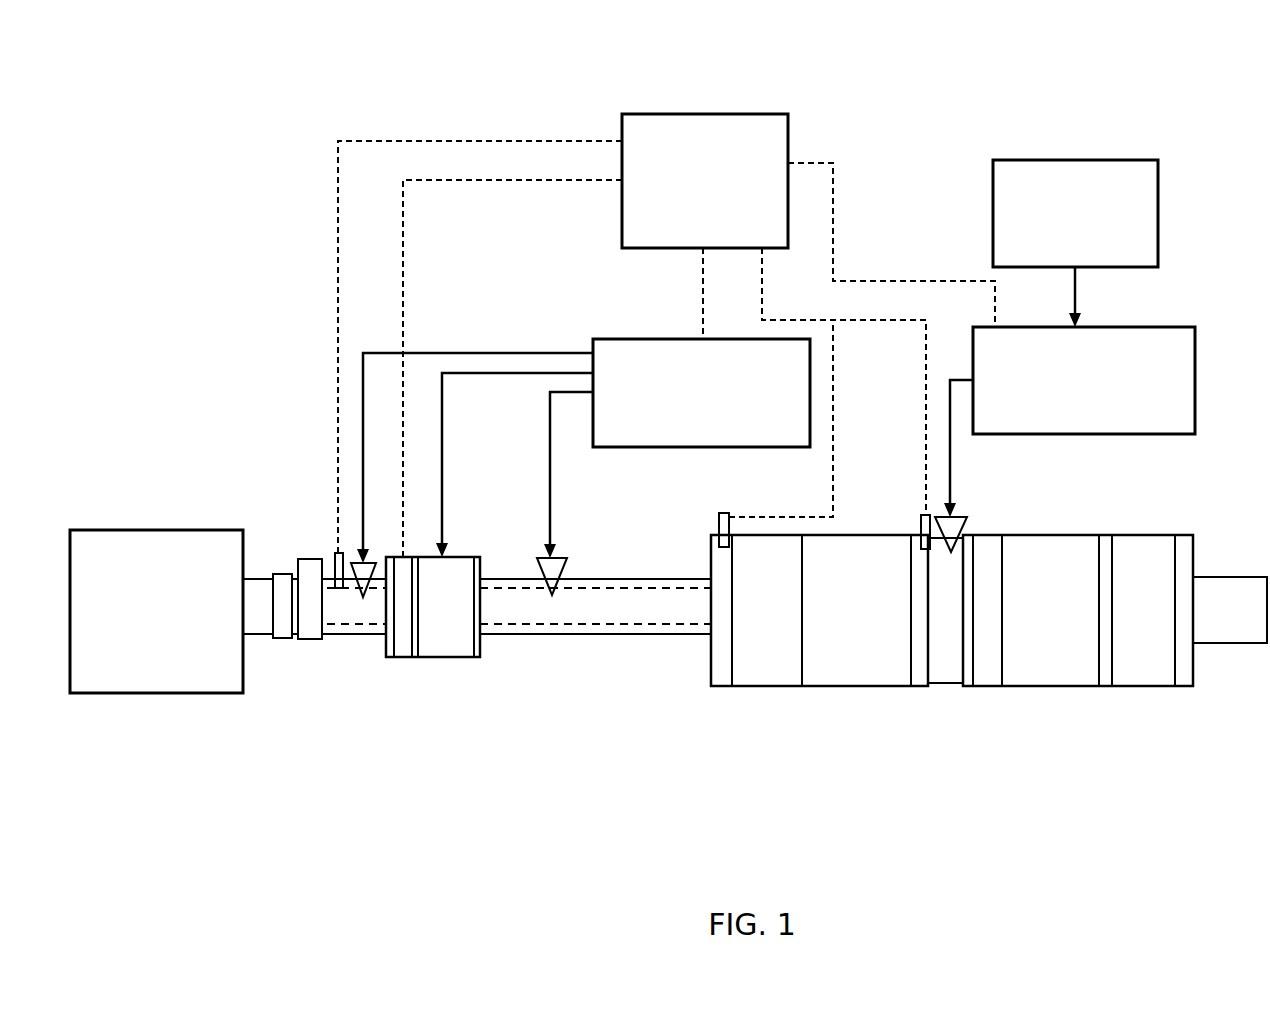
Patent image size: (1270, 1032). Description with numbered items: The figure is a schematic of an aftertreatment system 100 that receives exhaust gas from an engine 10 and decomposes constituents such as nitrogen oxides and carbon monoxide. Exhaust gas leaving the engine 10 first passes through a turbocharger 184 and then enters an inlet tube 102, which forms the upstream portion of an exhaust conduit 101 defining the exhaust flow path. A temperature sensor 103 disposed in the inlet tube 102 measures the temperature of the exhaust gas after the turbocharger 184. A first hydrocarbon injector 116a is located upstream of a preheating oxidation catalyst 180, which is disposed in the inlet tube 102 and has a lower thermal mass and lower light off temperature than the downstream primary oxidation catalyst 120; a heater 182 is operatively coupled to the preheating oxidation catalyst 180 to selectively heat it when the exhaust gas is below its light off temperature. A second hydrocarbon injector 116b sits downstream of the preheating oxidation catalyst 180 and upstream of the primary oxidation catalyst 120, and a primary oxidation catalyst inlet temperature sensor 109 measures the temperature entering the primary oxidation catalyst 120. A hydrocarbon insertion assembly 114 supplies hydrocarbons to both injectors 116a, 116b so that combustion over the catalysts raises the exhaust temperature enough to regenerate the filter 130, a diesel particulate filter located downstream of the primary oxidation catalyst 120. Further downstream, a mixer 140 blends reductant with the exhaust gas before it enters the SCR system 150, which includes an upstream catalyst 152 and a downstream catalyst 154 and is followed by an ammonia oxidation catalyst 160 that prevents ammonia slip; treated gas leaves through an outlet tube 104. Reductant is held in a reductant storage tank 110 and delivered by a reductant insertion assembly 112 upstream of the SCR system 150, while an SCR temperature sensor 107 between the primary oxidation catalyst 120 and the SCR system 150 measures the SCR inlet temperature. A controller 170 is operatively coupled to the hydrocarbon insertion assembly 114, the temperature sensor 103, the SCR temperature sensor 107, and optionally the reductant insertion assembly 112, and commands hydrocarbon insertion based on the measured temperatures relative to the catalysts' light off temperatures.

The aftertreatment system 100 is at (1146, 74).
The engine 10 is at (145, 636).
The controller 170 is at (687, 206).
The reductant storage tank 110 is at (1058, 252).
The reductant insertion assembly 112 is at (1066, 417).
The hydrocarbon insertion assembly 114 is at (684, 431).
The inlet tube 102 is at (540, 634).
The turbocharger 184 is at (308, 625).
The temperature sensor 103 is at (335, 560).
The first hydrocarbon injector 116a is at (365, 598).
The heater 182 is at (407, 643).
The preheating oxidation catalyst 180 is at (457, 643).
The second hydrocarbon injector 116b is at (562, 558).
The primary oxidation catalyst inlet temperature sensor 109 is at (719, 514).
The SCR temperature sensor 107 is at (921, 527).
The exhaust conduit 101 is at (720, 690).
The primary oxidation catalyst 120 is at (774, 673).
The filter 130 is at (873, 665).
The mixer 140 is at (945, 667).
The SCR system 150 is at (1026, 700).
The upstream catalyst 152 is at (982, 677).
The downstream catalyst 154 is at (1067, 672).
The ammonia oxidation catalyst 160 is at (1157, 675).
The outlet tube 104 is at (1236, 634).